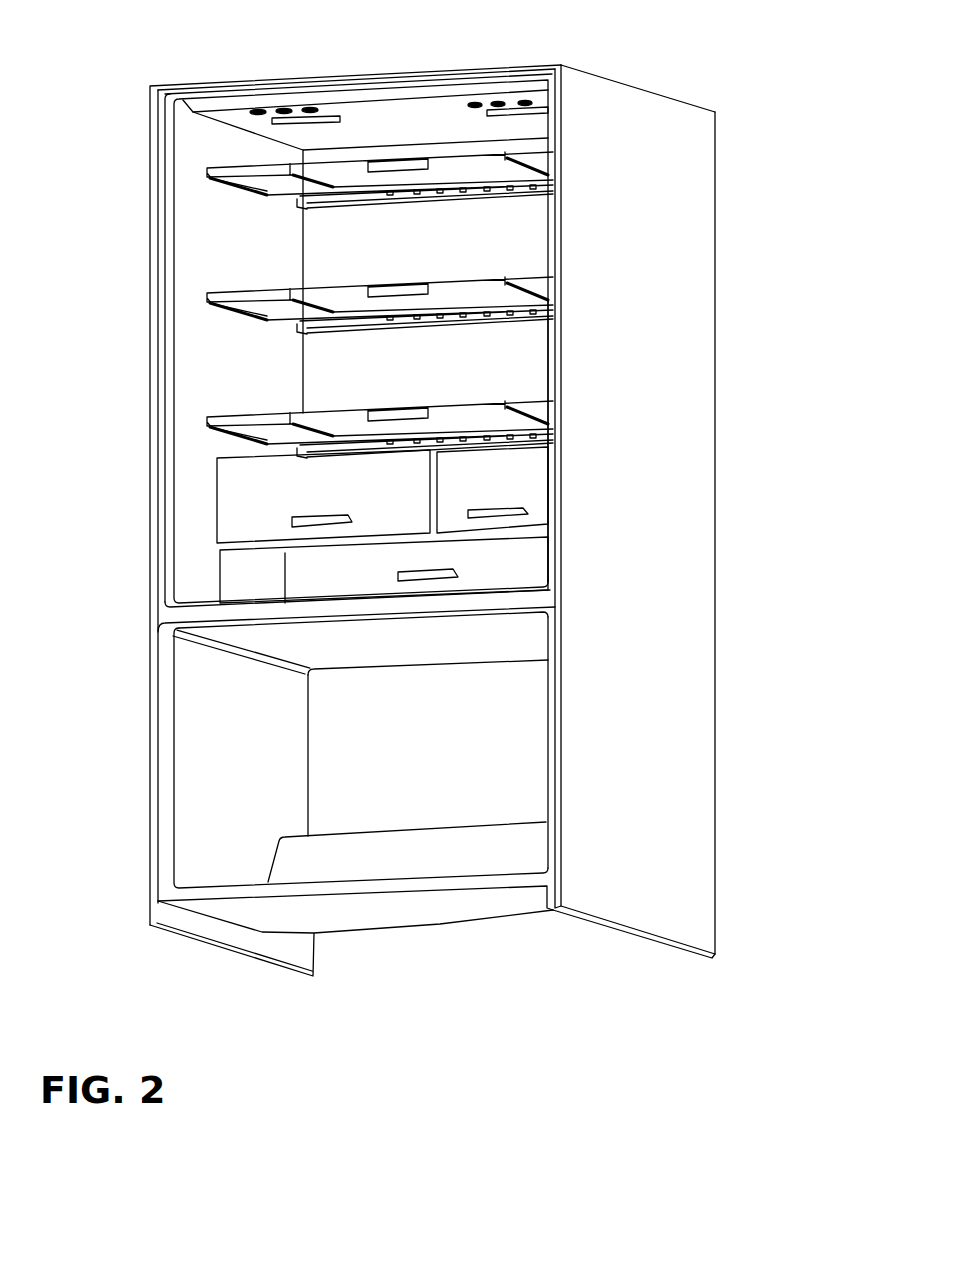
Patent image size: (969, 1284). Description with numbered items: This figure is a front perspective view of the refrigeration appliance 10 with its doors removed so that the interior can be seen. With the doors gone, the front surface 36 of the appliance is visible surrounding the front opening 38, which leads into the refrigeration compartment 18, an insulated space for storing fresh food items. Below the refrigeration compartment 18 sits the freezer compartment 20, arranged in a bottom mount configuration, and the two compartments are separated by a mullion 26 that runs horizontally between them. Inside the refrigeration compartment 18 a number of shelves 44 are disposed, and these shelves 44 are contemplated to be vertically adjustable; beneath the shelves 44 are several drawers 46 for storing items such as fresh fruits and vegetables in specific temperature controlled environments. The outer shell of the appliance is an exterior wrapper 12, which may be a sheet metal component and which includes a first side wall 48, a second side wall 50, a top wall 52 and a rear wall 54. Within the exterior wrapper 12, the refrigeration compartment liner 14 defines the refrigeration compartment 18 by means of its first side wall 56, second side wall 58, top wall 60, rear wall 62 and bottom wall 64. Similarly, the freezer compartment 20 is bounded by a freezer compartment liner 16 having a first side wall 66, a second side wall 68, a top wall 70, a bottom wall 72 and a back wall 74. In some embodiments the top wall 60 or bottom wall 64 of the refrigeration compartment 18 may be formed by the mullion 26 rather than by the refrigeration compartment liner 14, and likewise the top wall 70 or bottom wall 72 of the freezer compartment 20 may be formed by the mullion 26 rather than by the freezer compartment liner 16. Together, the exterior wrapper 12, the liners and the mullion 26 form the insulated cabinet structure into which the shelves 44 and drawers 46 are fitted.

The refrigeration appliance 10 is at (637, 60).
The exterior wrapper 12 is at (677, 662).
The refrigeration compartment liner 14 is at (222, 392).
The freezer compartment liner 16 is at (488, 717).
The refrigeration compartment 18 is at (250, 244).
The freezer compartment 20 is at (352, 762).
The mullion 26 is at (302, 610).
The front surface 36 is at (497, 567).
The front opening 38 is at (163, 402).
The shelves 44 is at (493, 172).
The drawers 46 is at (402, 497).
The first side wall 48 is at (147, 362).
The second side wall 50 is at (652, 289).
The top wall 52 is at (457, 70).
The rear wall 54 is at (721, 162).
The first side wall 56 is at (193, 494).
The second side wall 58 is at (550, 358).
The top wall 60 is at (300, 86).
The rear wall 62 is at (494, 238).
The bottom wall 64 is at (182, 598).
The first side wall 66 is at (200, 823).
The second side wall 68 is at (547, 794).
The top wall 70 is at (478, 640).
The bottom wall 72 is at (245, 884).
The back wall 74 is at (362, 713).